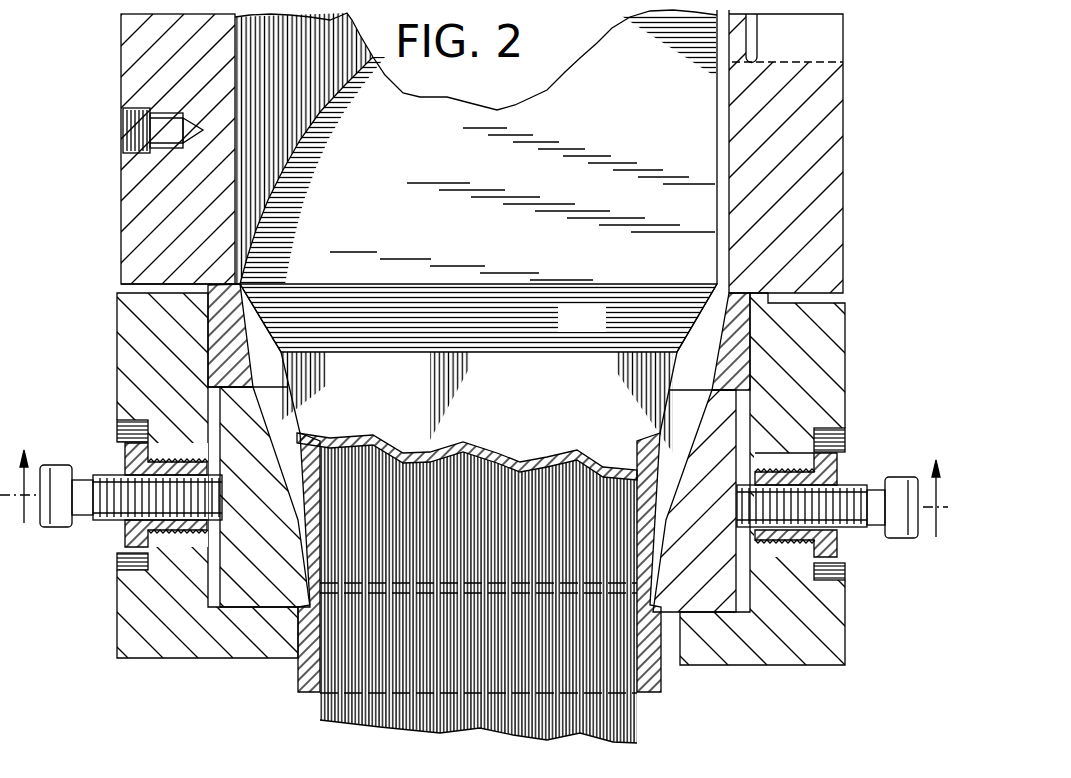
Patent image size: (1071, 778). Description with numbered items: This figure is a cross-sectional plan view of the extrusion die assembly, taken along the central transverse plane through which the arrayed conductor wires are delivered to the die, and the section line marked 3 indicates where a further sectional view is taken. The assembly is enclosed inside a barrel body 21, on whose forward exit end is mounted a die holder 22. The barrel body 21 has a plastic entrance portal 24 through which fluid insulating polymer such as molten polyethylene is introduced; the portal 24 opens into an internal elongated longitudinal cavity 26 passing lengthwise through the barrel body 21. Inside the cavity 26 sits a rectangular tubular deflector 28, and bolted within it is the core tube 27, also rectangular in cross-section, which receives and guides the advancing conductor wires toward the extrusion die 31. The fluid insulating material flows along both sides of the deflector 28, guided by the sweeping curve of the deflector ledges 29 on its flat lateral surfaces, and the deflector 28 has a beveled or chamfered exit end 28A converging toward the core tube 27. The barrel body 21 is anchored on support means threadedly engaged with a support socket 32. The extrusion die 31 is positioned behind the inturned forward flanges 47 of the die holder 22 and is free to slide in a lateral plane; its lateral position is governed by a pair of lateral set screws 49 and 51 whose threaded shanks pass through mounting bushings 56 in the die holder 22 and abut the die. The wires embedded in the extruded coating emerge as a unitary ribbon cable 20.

The ribbon cable 20 is at (603, 718).
The barrel body 21 is at (138, 233).
The die holder 22 is at (135, 320).
The plastic entrance portal 24 is at (820, 47).
The internal elongated longitudinal cavity 26 is at (723, 152).
The core tube 27 is at (552, 407).
The deflector 28 is at (500, 176).
The chamfered exit end 28A is at (603, 329).
The deflector ledges 29 is at (290, 168).
The extrusion die 31 is at (312, 690).
The support socket 32 is at (133, 137).
The inturned forward flanges 47 is at (262, 610).
The lateral set screw 49 is at (62, 528).
The lateral set screw 51 is at (893, 540).
The mounting bushings 56 is at (127, 470).
The section line 3- 3 is at (474, 477).